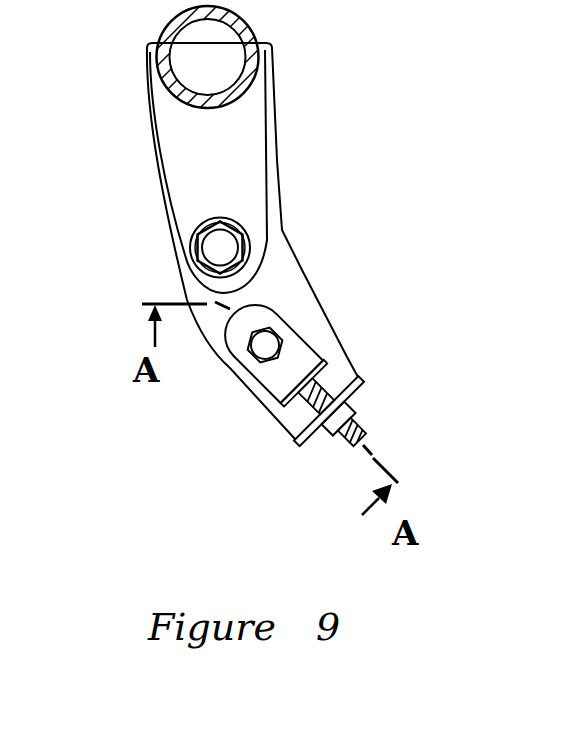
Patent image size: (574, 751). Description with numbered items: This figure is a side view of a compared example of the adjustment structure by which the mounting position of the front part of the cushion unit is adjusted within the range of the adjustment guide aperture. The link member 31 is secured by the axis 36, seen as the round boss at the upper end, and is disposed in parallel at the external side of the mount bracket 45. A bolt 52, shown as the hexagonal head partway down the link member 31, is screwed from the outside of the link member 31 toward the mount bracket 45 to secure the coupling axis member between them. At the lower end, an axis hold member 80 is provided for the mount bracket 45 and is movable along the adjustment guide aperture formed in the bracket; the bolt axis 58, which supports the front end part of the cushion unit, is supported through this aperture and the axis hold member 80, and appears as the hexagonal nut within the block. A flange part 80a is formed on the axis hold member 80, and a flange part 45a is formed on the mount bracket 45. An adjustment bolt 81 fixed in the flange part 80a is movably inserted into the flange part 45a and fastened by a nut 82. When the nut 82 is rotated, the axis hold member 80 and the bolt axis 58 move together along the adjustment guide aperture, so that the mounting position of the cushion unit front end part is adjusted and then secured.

The axis 36 is at (162, 29).
The link member 31 is at (182, 145).
The mount bracket 45 is at (281, 229).
The bolt 52 is at (213, 248).
The axis hold member 80 is at (297, 350).
The flange part 80a is at (322, 363).
The adjustment bolt 81 is at (357, 425).
The bolt axis 58 is at (266, 341).
The flange part 45a is at (290, 437).
The nut 82 is at (327, 430).